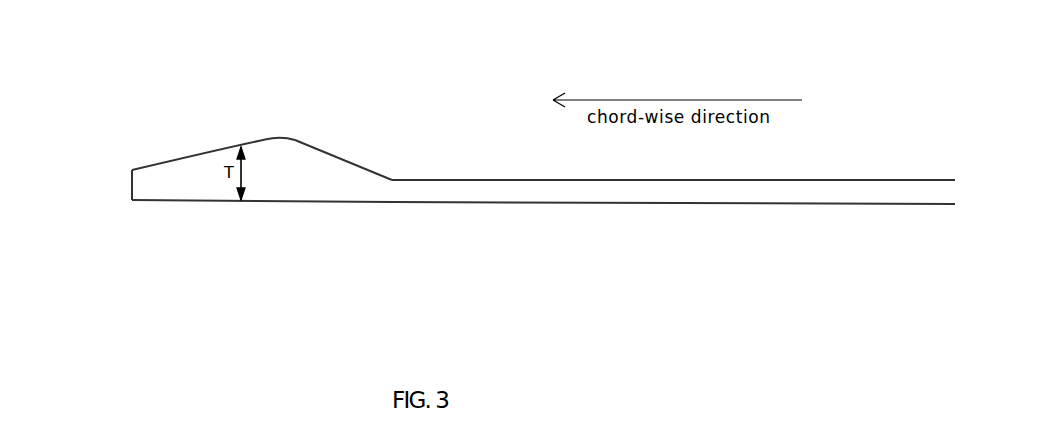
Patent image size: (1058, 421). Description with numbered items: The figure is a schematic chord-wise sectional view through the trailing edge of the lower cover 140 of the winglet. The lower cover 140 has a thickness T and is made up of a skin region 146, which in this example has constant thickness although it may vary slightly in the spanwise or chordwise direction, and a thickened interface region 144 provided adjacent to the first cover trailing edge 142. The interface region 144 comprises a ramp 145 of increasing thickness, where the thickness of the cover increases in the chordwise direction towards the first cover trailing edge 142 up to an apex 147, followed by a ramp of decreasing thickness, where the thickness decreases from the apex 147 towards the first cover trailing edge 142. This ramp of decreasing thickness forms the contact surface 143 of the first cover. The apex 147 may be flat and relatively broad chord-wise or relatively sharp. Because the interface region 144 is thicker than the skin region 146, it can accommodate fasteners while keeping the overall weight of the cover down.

The lower cover 140 is at (525, 158).
The first cover trailing edge 142 is at (132, 183).
The contact surface 143 is at (215, 150).
The interface region 144 is at (262, 183).
The ramp of increasing thickness 145 is at (333, 152).
The skin region 146 is at (653, 195).
The apex 147 is at (290, 138).